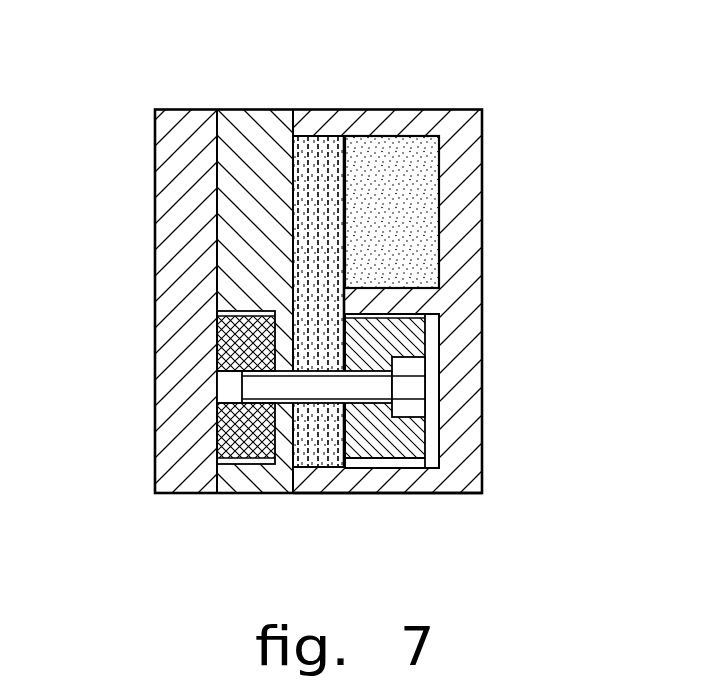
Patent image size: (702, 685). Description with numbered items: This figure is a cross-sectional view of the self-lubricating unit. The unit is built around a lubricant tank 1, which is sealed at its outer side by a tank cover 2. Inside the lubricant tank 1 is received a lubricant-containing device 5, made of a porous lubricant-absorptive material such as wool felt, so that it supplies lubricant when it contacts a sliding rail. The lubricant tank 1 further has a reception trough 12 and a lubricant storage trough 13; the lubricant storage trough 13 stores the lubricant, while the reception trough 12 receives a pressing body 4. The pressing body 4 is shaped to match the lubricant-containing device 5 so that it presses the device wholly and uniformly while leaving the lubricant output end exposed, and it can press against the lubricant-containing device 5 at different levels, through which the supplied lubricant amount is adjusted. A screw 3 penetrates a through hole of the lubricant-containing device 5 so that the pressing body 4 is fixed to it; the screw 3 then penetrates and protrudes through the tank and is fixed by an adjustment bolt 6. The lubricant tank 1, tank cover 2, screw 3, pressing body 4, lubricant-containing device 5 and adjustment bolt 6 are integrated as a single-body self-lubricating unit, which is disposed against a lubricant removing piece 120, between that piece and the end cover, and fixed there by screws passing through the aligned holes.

The lubricant tank 1 is at (427, 110).
The tank cover 2 is at (250, 193).
The screw 3 is at (415, 407).
The pressing body 4 is at (423, 313).
The lubricant-containing device 5 is at (317, 467).
The adjustment bolt 6 is at (233, 466).
The reception trough 12 is at (410, 468).
The lubricant storage trough 13 is at (420, 187).
The lubricant removing piece 120 is at (178, 371).